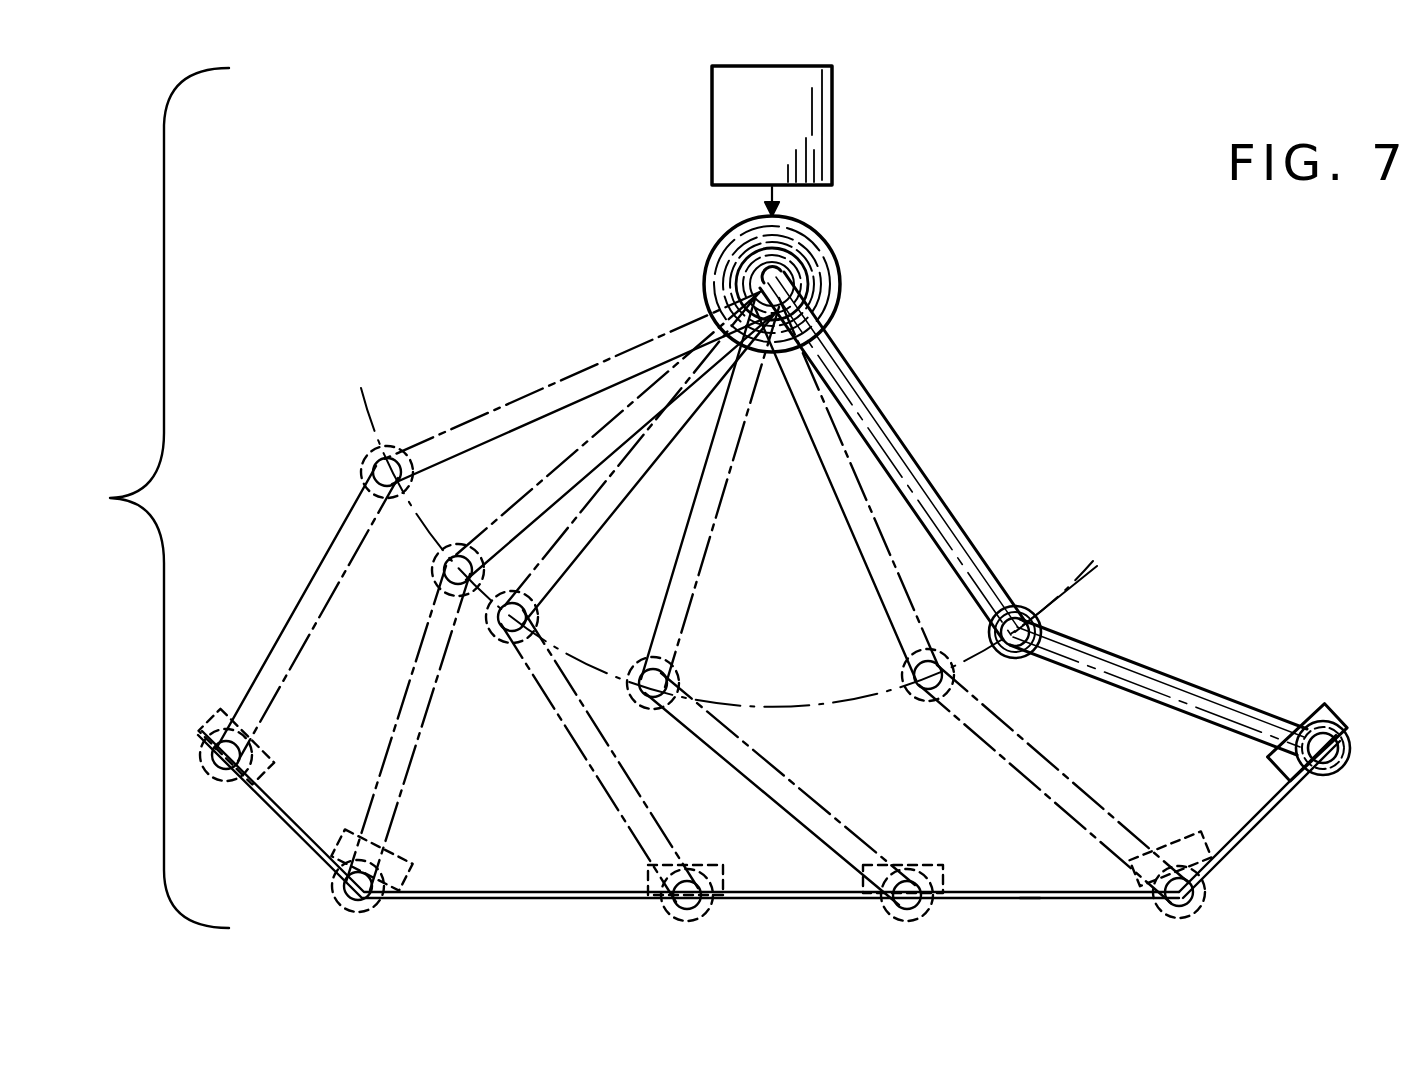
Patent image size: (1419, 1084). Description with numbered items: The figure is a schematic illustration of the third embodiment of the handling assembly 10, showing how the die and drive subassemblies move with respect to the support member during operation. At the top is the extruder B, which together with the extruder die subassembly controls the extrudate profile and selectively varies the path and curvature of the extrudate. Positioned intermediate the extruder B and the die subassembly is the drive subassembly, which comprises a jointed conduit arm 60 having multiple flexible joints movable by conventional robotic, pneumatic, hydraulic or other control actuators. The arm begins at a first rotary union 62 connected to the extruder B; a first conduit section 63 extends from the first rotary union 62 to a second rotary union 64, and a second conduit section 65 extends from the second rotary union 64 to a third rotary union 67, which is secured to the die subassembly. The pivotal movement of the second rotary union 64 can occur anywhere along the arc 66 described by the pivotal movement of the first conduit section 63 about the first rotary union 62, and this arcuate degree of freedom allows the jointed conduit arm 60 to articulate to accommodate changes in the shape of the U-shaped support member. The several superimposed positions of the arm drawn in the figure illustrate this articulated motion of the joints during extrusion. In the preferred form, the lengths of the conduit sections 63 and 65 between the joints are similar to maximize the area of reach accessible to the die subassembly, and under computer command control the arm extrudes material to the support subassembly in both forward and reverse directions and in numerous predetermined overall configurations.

The assembly 10 is at (112, 497).
The extruder B is at (832, 140).
The first rotary union 62 is at (800, 272).
The jointed conduit arm 60 is at (1068, 478).
The first conduit section 63 is at (932, 470).
The second rotary union 64 is at (1030, 612).
The arc 66 is at (1072, 604).
The second conduit section 65 is at (1150, 665).
The third rotary union 67 is at (1340, 772).